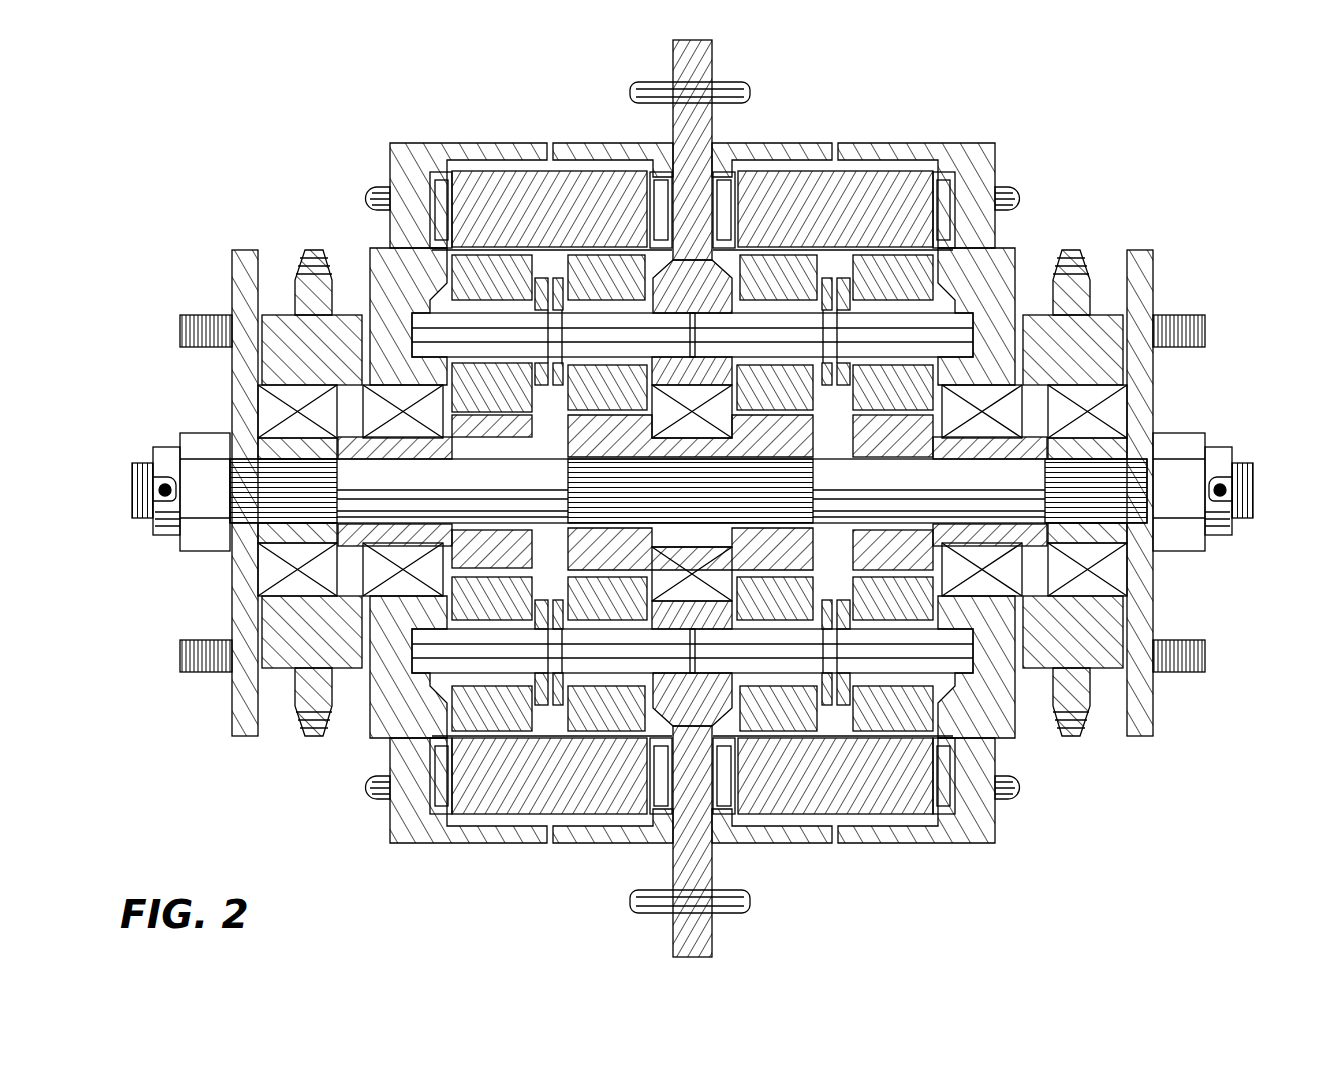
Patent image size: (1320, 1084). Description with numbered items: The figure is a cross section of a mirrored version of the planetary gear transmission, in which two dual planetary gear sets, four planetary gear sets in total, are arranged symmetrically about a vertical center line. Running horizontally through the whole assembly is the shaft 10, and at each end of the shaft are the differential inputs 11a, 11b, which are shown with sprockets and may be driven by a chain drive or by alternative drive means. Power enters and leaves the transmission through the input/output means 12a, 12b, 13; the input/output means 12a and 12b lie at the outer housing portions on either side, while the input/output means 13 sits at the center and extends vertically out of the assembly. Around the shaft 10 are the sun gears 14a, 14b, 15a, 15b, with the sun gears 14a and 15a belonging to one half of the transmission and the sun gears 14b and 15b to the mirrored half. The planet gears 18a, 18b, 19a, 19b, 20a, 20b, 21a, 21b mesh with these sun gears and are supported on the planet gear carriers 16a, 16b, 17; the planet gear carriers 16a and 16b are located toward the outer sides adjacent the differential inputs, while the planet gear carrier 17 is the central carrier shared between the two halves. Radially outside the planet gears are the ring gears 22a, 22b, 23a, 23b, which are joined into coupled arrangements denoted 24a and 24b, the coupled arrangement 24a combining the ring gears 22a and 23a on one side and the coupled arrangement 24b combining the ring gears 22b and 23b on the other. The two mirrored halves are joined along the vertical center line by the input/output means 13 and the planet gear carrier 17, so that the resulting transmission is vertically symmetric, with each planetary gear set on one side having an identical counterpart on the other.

The shaft 10 is at (135, 463).
The differential input 11a is at (297, 283).
The differential input 11b is at (1083, 293).
The input/output means 12a is at (478, 152).
The input/output means 12b is at (908, 152).
The input/output means 13 is at (712, 58).
The sun gear 14a is at (492, 549).
The sun gear 14b is at (893, 436).
The sun gear 15a is at (690, 436).
The sun gear 15b is at (690, 549).
The planet gear carrier 16a is at (405, 493).
The planet gear carrier 16b is at (980, 493).
The planet gear carrier 17 is at (692, 493).
The planet gear 18a is at (492, 387).
The planet gear 18b is at (893, 387).
The planet gear 19a is at (606, 277).
The planet gear 19b is at (778, 277).
The planet gear 20a is at (492, 598).
The planet gear 20b is at (893, 598).
The planet gear 21a is at (606, 708).
The planet gear 21b is at (778, 708).
The ring gear 22a is at (470, 493).
The ring gear 22b is at (912, 493).
The ring gear 23a is at (629, 493).
The ring gear 23b is at (755, 493).
The coupled arrangement 24a is at (549, 492).
The coupled arrangement 24b is at (835, 492).